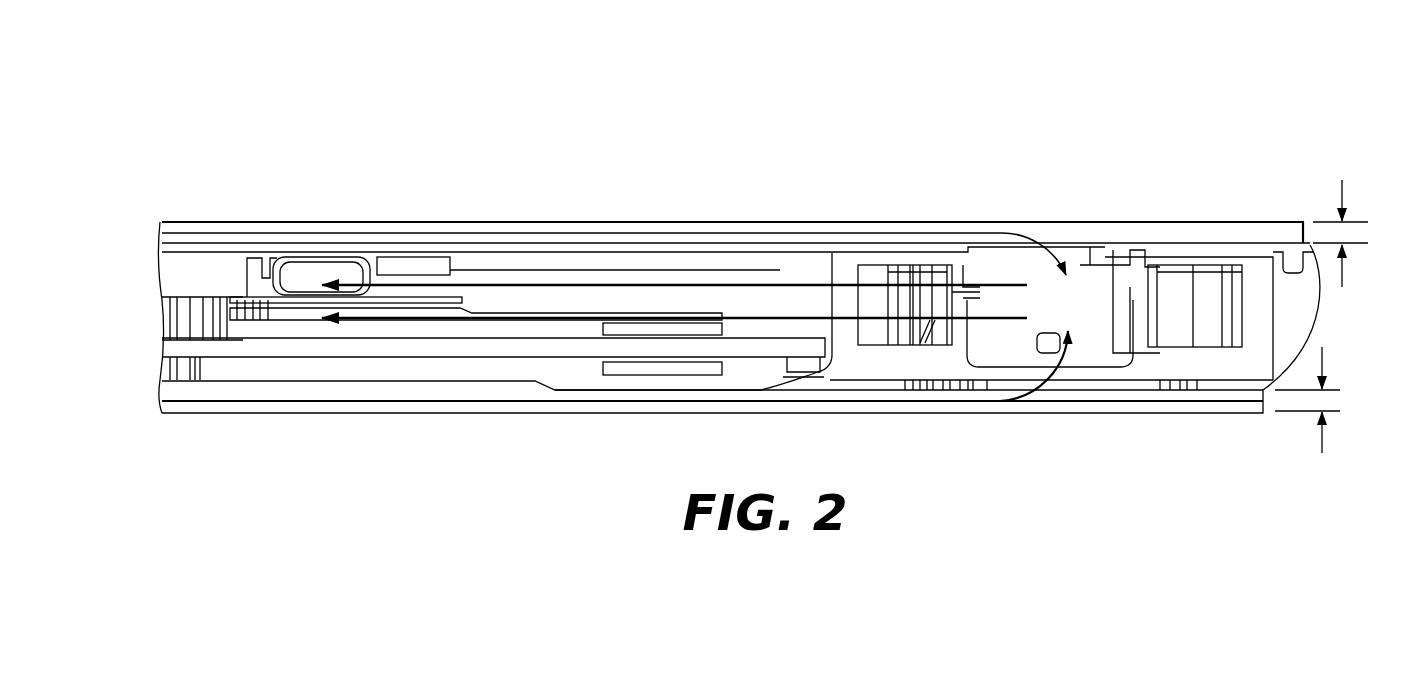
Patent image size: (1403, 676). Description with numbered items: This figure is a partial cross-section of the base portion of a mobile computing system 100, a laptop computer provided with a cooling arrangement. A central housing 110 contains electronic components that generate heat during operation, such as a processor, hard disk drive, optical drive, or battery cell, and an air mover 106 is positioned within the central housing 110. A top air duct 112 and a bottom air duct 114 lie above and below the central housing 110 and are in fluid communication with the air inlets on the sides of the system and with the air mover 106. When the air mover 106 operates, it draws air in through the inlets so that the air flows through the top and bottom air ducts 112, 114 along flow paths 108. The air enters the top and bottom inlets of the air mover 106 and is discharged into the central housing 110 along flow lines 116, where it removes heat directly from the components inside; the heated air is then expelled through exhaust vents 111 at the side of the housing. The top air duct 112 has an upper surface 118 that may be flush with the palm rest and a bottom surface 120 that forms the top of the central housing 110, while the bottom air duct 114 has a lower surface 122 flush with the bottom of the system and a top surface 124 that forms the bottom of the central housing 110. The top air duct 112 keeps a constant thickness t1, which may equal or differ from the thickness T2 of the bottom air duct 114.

The mobile computing system 100 is at (190, 109).
The air mover 106 is at (1077, 300).
The air flow paths 108 is at (928, 232).
The central housing 110 is at (727, 300).
The exhaust vents 111 is at (173, 320).
The top air duct 112 is at (1262, 229).
The bottom air duct 114 is at (1214, 400).
The flow lines 116 is at (501, 318).
The upper surface 118 is at (1095, 247).
The bottom surface 120 is at (1186, 247).
The lower surface 122 is at (1167, 413).
The top surface 124 is at (1075, 390).
The thickness of top air duct t1 is at (1343, 192).
The thickness of bottom duct T2 is at (1323, 438).